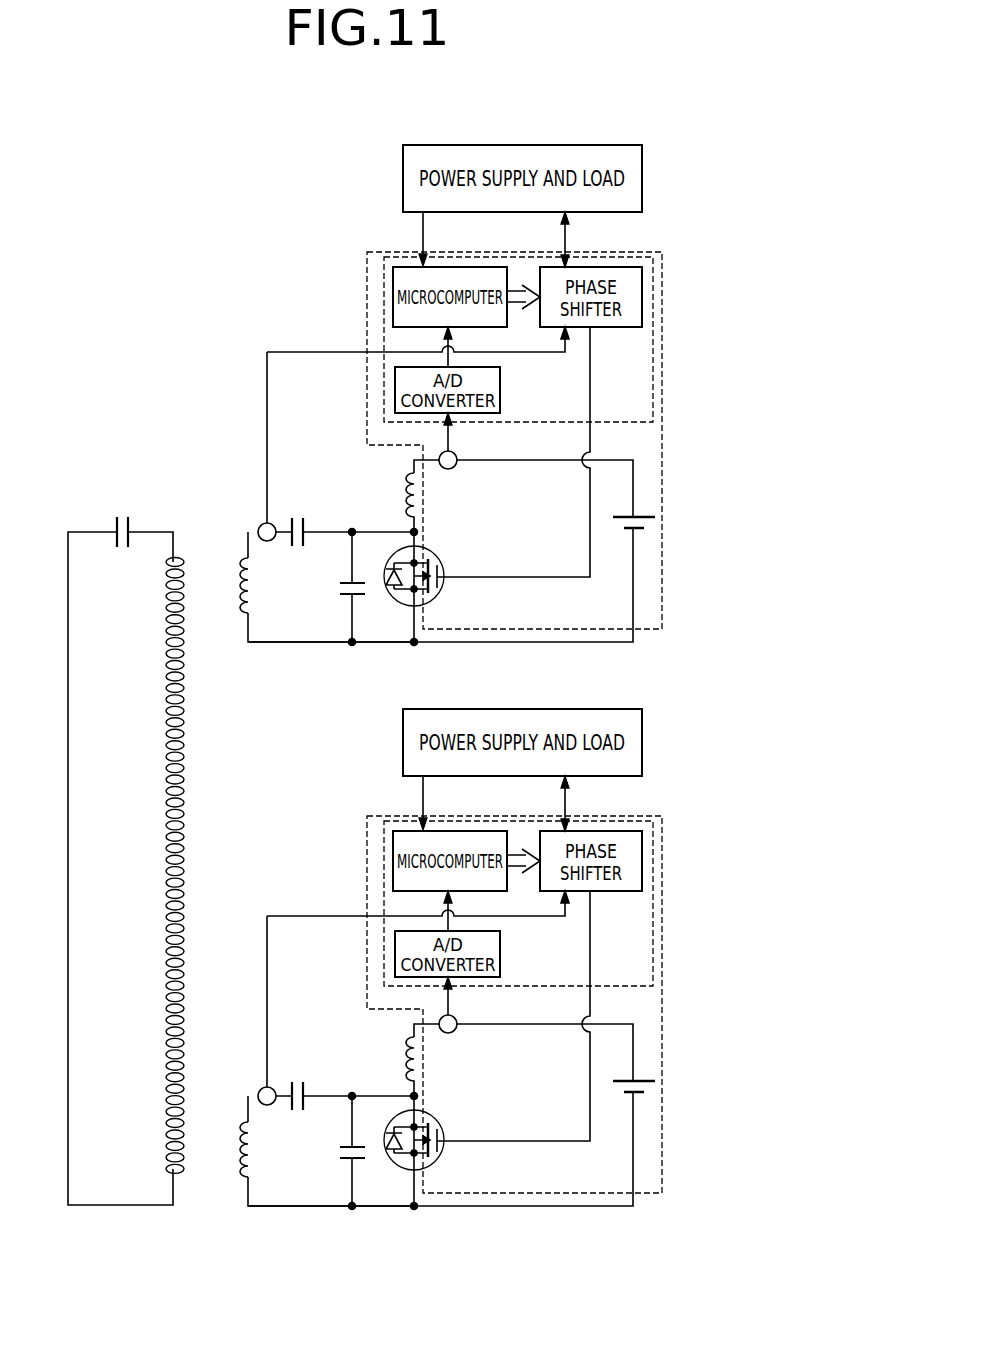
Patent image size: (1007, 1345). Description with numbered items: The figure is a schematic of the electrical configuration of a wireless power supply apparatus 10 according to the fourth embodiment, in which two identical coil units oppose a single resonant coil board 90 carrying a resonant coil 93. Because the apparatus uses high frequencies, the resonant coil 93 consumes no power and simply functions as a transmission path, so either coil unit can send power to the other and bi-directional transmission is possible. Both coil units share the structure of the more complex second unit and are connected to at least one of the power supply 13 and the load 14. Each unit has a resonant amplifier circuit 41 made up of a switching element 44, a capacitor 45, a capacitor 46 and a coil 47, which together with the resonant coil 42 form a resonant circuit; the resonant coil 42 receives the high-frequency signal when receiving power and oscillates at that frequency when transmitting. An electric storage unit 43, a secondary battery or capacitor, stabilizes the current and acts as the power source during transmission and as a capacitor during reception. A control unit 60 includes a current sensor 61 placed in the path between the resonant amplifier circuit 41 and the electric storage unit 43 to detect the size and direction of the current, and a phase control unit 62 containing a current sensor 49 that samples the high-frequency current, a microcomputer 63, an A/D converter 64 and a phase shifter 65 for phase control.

The wireless power supply apparatus 10 is at (455, 684).
The power supply 13 is at (546, 461).
The load 14 is at (540, 145).
The resonant amplifier circuit 41 is at (278, 645).
The resonant coil 42 is at (241, 560).
The electric storage unit 43 is at (652, 516).
The switching element 44 is at (396, 602).
The capacitor 45 is at (297, 518).
The capacitor 46 is at (345, 596).
The coil 47 is at (404, 487).
The current sensor 49 is at (262, 524).
The control unit 60 is at (367, 278).
The current sensor 61 is at (440, 455).
The phase control unit 62 is at (384, 340).
The microcomputer 63 is at (393, 300).
The analog/digital (A/D) converter 64 is at (395, 388).
The phase shifter 65 is at (642, 297).
The resonant coil board 90 is at (131, 813).
The resonant coil 93 is at (186, 760).